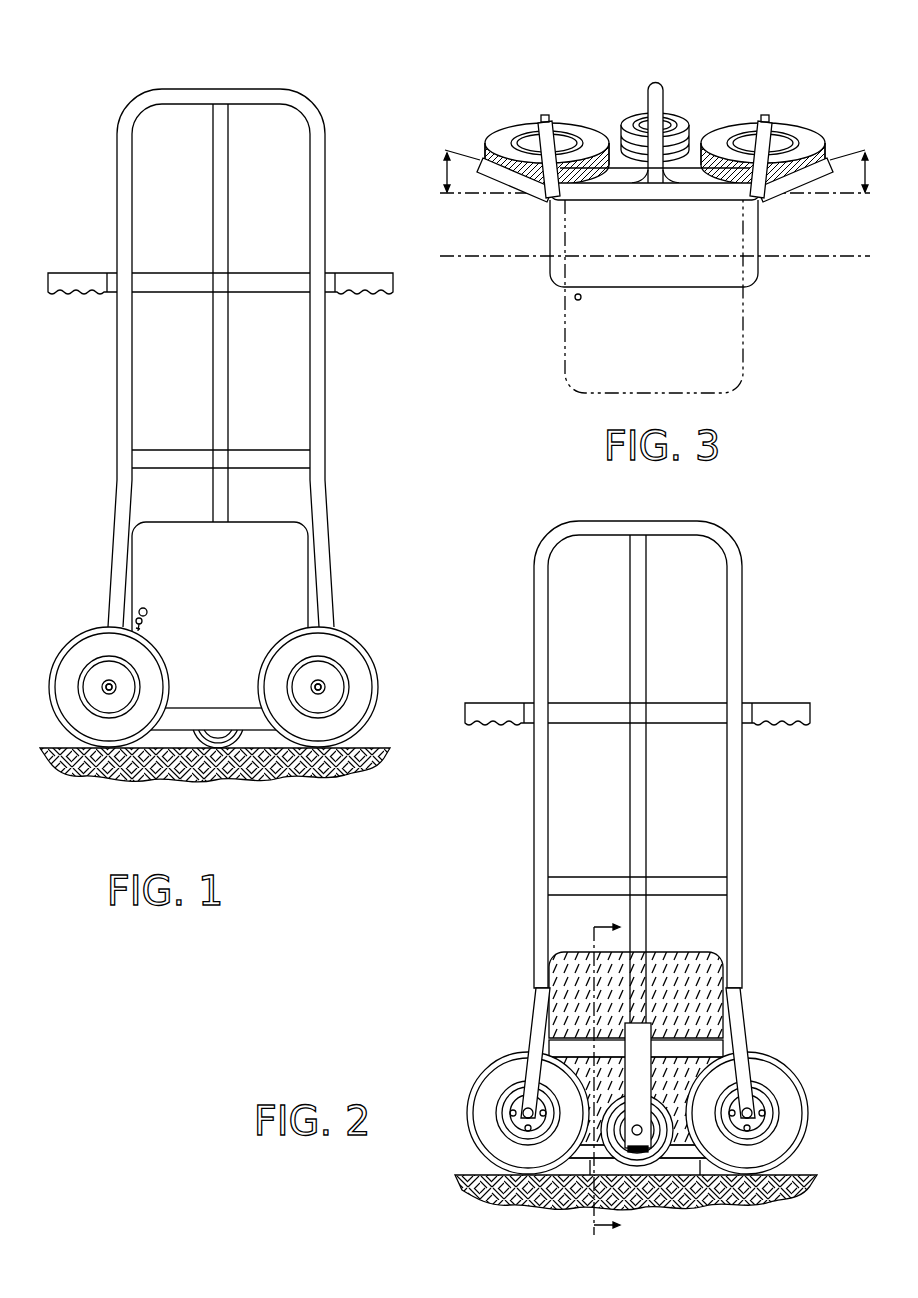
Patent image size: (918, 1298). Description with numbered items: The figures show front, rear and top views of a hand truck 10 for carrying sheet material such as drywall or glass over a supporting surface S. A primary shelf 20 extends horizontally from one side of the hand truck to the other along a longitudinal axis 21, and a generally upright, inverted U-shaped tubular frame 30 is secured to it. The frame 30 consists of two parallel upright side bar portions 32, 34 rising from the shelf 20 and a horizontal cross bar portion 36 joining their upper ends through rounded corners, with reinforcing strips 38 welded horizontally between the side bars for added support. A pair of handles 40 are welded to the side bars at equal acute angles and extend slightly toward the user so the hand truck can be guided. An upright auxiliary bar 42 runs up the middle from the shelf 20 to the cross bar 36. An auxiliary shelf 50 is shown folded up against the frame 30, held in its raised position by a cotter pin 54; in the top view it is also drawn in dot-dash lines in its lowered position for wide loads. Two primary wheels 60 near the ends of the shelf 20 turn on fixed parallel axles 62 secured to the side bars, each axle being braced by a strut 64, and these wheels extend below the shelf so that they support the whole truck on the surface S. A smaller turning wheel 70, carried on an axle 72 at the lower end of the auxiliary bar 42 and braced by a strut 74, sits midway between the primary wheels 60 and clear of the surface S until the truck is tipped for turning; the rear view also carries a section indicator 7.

In FIG. 1, the hand truck 10 is at (330, 100).
In FIG. 3, the hand truck 10 is at (622, 98).
In FIG. 2, the hand truck 10 is at (530, 535).
In FIG. 1, the primary shelf 20 is at (170, 715).
In FIG. 3, the primary shelf 20 is at (758, 290).
In FIG. 2, the primary shelf 20 is at (675, 1168).
In FIG. 3, the longitudinal axis 21 is at (486, 258).
In FIG. 1, the frame 30 is at (330, 415).
In FIG. 2, the frame 30 is at (528, 582).
In FIG. 1, the side bar portion 32 is at (125, 360).
In FIG. 2, the side bar portion 32 is at (740, 638).
In FIG. 1, the side bar portion 34 is at (318, 360).
In FIG. 2, the side bar portion 34 is at (540, 640).
In FIG. 1, the cross bar portion 36 is at (221, 111).
In FIG. 3, the cross bar portion 36 is at (628, 200).
In FIG. 2, the cross bar portion 36 is at (640, 525).
In FIG. 1, the reinforcing strips 38 is at (155, 280).
In FIG. 2, the reinforcing strips 38 is at (570, 705).
In FIG. 1, the handles 40 is at (85, 272).
In FIG. 3, the handles 40 is at (470, 160).
In FIG. 2, the handles 40 is at (520, 703).
In FIG. 1, the auxiliary bar 42 is at (225, 405).
In FIG. 3, the auxiliary bar 42 is at (655, 134).
In FIG. 2, the auxiliary bar 42 is at (648, 797).
In FIG. 1, the auxiliary shelf 50 is at (195, 522).
In FIG. 3, the auxiliary shelf 50 is at (565, 390).
In FIG. 2, the auxiliary shelf 50 is at (650, 955).
In FIG. 1, the cotter pin 54 is at (152, 607).
In FIG. 1, the primary wheels 60 is at (85, 638).
In FIG. 3, the primary wheels 60 is at (520, 135).
In FIG. 2, the primary wheels 60 is at (470, 1122).
In FIG. 1, the axles 62 is at (100, 697).
In FIG. 3, the axles 62 is at (545, 120).
In FIG. 2, the axles 62 is at (505, 1103).
In FIG. 3, the struts 64 is at (555, 125).
In FIG. 2, the struts 64 is at (530, 1020).
In FIG. 1, the turning wheel 70 is at (240, 758).
In FIG. 3, the turning wheel 70 is at (670, 112).
In FIG. 2, the turning wheel 70 is at (640, 1170).
In FIG. 2, the axle 72 is at (660, 1160).
In FIG. 2, the strut 74 is at (645, 1035).
In FIG. 2, the section line 7 is at (595, 1078).
In FIG. 1, the supporting surface S is at (388, 752).
In FIG. 2, the supporting surface S is at (815, 1180).